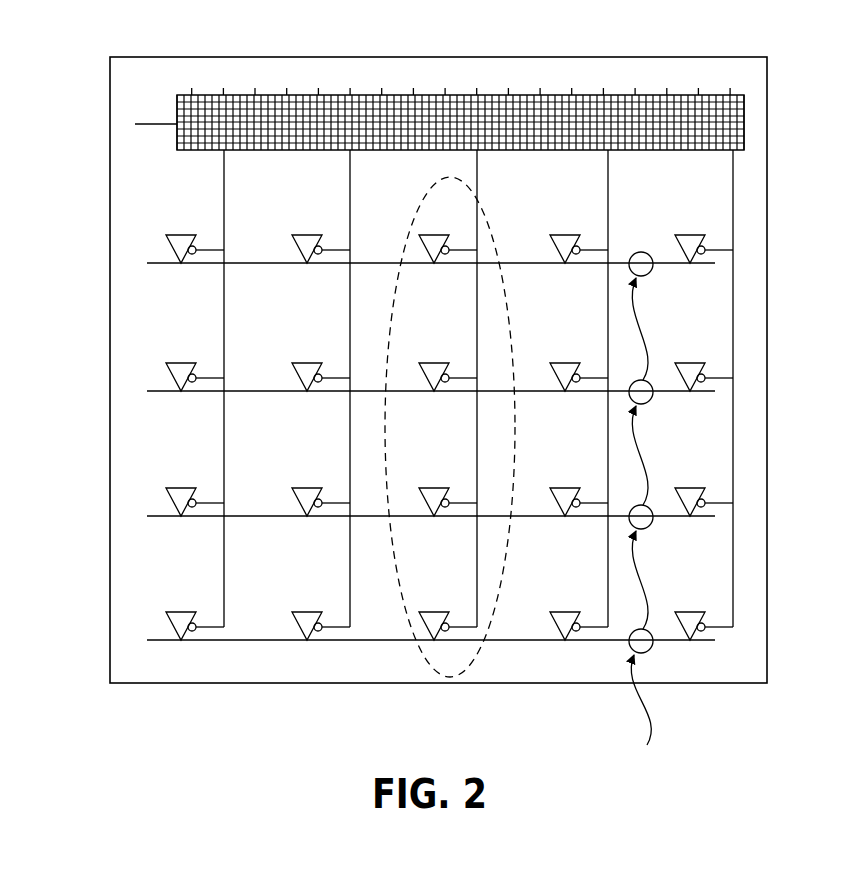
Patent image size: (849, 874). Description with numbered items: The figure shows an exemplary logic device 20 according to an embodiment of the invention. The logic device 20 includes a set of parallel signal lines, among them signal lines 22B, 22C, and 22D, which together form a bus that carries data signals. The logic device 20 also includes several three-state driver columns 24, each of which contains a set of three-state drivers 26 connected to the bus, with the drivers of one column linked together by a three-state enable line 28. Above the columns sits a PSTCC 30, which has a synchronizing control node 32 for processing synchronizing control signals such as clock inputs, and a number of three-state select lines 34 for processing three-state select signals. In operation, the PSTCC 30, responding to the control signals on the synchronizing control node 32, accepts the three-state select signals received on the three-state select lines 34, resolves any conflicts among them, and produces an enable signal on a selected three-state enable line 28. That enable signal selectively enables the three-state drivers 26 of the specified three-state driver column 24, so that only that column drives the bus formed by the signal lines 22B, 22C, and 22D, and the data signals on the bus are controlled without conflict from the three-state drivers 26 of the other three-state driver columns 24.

The logic device 20 is at (772, 628).
The parallel signal line 22B is at (247, 517).
The parallel signal line 22C is at (247, 392).
The parallel signal line 22D is at (247, 264).
The three-state driver column 24 is at (255, 644).
The three-state driver 26 is at (180, 482).
The three-state enable line 28 is at (738, 450).
The PSTCC 30 is at (750, 125).
The synchronizing control node 32 is at (158, 128).
The three-state select lines 34 is at (253, 78).